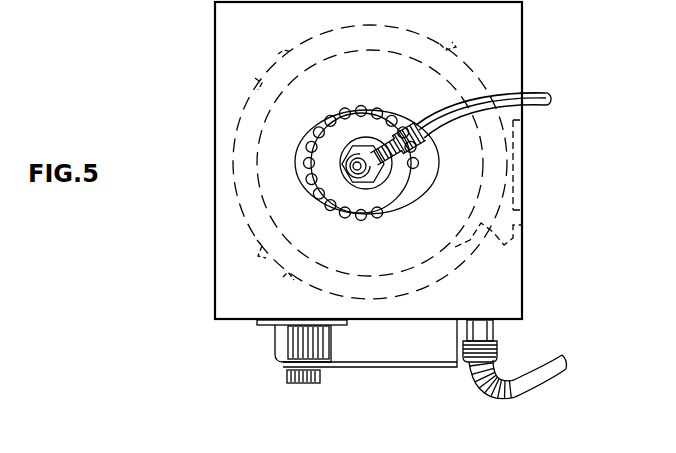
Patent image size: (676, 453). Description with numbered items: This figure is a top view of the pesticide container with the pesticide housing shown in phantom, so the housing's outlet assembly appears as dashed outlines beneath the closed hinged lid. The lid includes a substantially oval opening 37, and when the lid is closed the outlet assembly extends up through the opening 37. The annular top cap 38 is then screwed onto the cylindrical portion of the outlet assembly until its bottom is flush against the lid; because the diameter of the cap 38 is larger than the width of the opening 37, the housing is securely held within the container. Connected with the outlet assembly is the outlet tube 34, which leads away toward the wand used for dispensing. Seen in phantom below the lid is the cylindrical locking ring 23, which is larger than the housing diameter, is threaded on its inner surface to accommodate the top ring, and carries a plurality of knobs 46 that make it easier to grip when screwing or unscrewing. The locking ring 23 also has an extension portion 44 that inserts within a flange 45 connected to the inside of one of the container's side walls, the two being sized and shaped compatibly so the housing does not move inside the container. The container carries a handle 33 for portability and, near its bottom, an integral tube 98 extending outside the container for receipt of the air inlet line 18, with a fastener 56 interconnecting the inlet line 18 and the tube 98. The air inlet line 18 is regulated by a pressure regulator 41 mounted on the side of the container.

The air inlet line 18 is at (549, 380).
The locking ring 23 is at (430, 41).
The handle 33 is at (414, 368).
The outlet tube 34 is at (534, 97).
The oval opening 37 is at (304, 184).
The top cap 38 is at (362, 125).
The pressure regulator 41 is at (285, 381).
The extension portion 44 is at (522, 229).
The flange 45 is at (520, 178).
The knobs 46 is at (272, 68).
The fastener 56 is at (496, 371).
The integral tube 98 is at (494, 331).